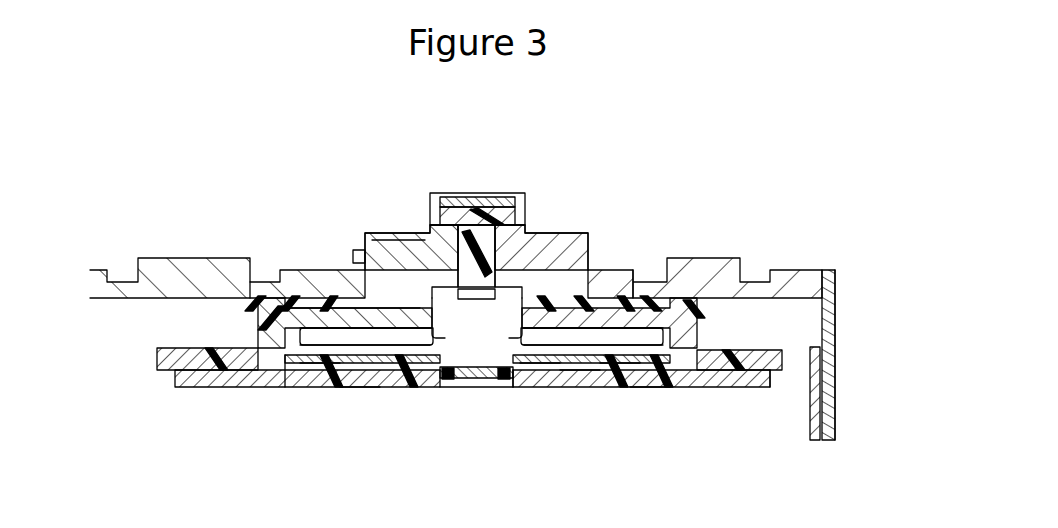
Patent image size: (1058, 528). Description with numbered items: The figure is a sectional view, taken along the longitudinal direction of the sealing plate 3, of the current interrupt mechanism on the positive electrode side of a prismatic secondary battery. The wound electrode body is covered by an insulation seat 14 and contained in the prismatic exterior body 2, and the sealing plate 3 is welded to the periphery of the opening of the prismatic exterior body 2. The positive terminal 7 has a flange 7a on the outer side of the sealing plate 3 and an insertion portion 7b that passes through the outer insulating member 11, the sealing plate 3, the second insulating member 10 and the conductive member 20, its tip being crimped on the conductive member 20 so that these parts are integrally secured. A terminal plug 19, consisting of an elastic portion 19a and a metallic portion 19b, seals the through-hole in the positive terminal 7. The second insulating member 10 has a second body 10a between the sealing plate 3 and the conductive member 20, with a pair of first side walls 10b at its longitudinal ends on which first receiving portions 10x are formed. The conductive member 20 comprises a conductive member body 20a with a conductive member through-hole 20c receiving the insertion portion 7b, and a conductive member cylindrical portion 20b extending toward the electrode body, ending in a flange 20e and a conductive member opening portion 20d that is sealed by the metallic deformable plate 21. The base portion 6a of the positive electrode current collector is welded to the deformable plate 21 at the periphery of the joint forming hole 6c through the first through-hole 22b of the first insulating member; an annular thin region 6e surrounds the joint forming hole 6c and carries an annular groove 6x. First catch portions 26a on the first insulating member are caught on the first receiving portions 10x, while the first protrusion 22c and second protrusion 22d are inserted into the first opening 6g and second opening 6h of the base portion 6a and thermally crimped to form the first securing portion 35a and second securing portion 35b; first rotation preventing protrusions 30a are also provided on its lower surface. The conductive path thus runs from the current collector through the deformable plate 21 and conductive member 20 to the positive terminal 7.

The prismatic exterior body 2 is at (833, 408).
The sealing plate 3 is at (160, 270).
The base portion 6a is at (203, 387).
The joint forming hole 6c is at (490, 387).
The thin region 6e is at (432, 387).
The first opening 6g is at (290, 387).
The second opening 6h is at (687, 390).
The annular groove 6x is at (515, 387).
The positive terminal 7 is at (418, 159).
The flange 7a is at (390, 250).
The insertion portion 7b is at (462, 258).
The second insulating member 10 is at (735, 182).
The second body 10a is at (650, 290).
The first side walls 10b is at (692, 296).
The first receiving portions 10x is at (257, 300).
The outer insulating member 11 is at (600, 266).
The insulation seat 14 is at (818, 358).
The terminal plug 19 is at (445, 132).
The elastic portion 19a is at (505, 205).
The metallic portion 19b is at (470, 196).
The conductive member 20 is at (355, 199).
The conductive member body 20a is at (330, 302).
The conductive member cylindrical portion 20b is at (292, 302).
The conductive member through-hole 20c is at (540, 268).
The conductive member opening portion 20d is at (318, 352).
The flange 20e is at (247, 372).
The deformable plate 21 is at (573, 388).
The first through-hole 22b is at (537, 390).
The first protrusion 22c is at (320, 387).
The second protrusion 22d is at (622, 390).
The first catch portions 26a is at (250, 330).
The first rotation preventing protrusions 30a is at (760, 388).
The first securing portion 35a is at (350, 387).
The second securing portion 35b is at (655, 390).